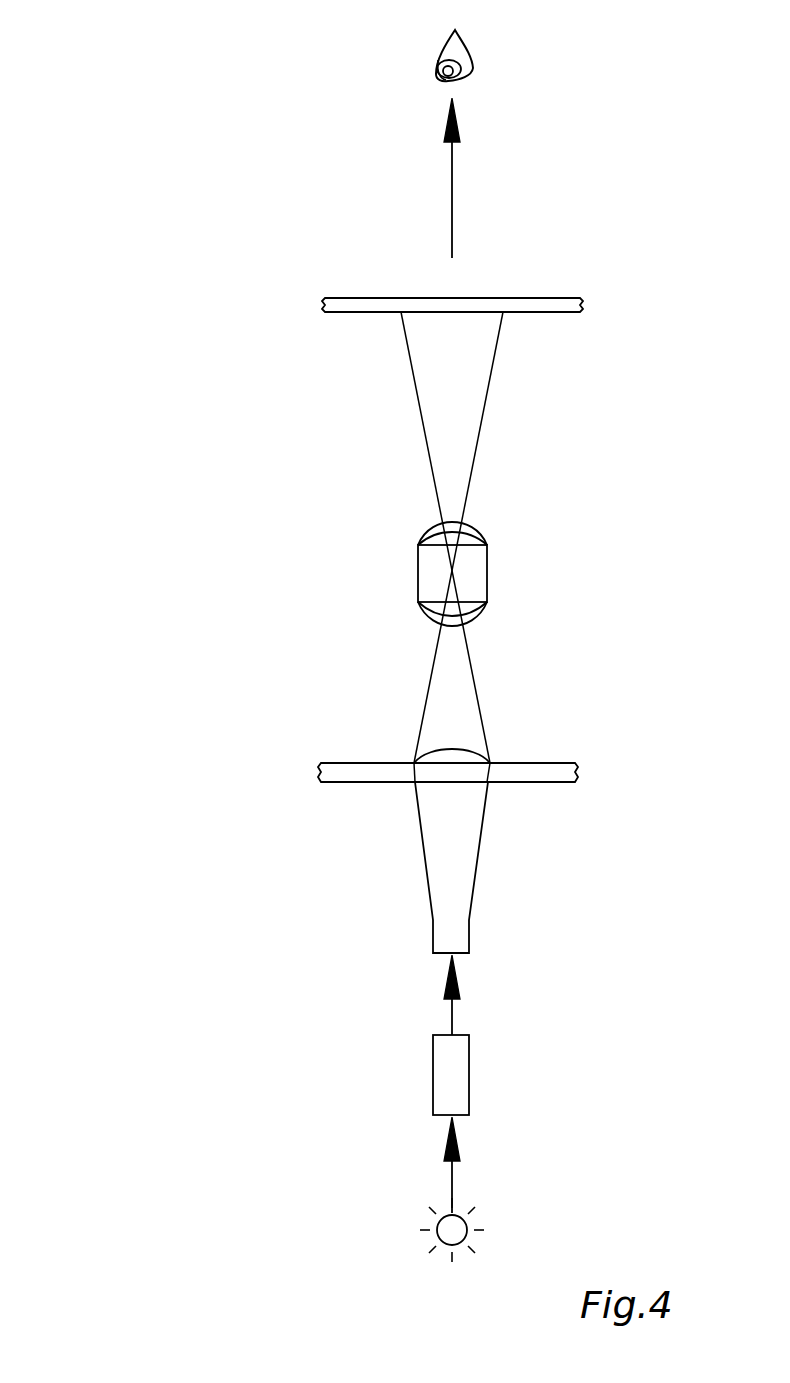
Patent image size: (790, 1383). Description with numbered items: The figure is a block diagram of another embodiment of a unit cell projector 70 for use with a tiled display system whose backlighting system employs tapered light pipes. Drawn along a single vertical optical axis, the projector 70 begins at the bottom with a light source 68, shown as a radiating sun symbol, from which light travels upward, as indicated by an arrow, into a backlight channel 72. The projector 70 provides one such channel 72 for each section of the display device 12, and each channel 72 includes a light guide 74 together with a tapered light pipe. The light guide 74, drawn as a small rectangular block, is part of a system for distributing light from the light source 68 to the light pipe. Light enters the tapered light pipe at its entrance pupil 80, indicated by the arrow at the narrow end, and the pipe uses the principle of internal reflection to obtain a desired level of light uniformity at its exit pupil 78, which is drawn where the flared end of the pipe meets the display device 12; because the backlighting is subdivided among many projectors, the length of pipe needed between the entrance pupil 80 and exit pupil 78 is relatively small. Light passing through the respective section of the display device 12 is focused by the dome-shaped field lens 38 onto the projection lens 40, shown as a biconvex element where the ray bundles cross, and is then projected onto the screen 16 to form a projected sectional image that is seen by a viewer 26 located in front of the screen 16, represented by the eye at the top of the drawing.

The display device 12 is at (572, 763).
The screen 16 is at (575, 298).
The viewer 26 is at (458, 50).
The field lens 38 is at (456, 749).
The projection lens 40 is at (487, 548).
The light source 68 is at (458, 1244).
The unit cell projector 70 is at (149, 219).
The backlight channel 72 is at (408, 1126).
The light guide 74 is at (475, 870).
The exit pupil 78 is at (492, 765).
The entrance pupil 80 is at (458, 957).